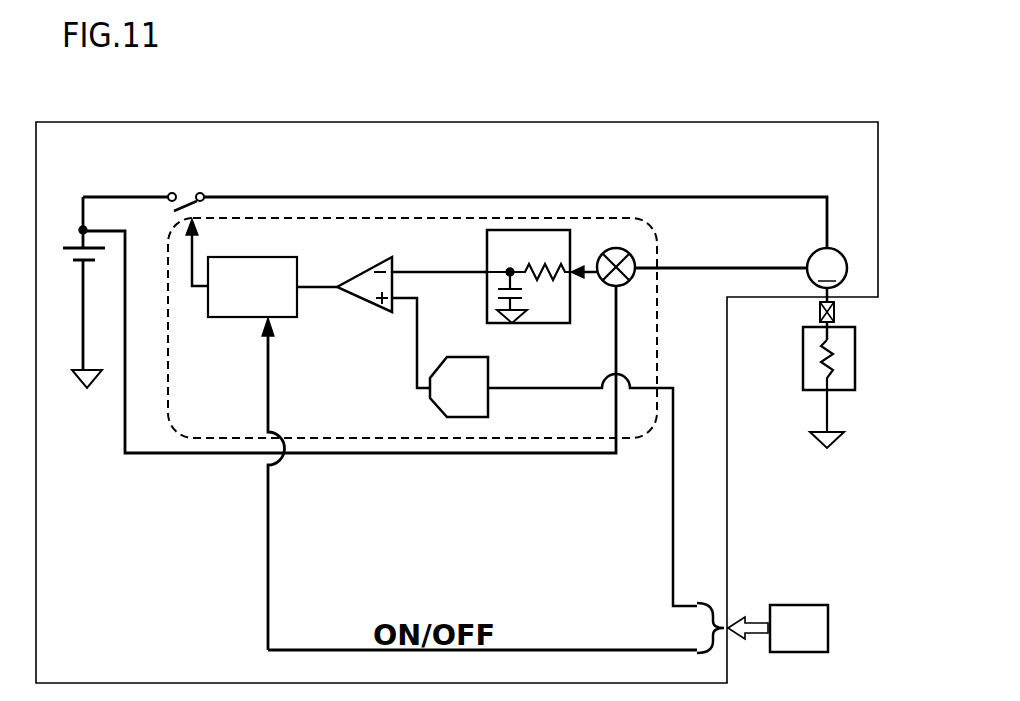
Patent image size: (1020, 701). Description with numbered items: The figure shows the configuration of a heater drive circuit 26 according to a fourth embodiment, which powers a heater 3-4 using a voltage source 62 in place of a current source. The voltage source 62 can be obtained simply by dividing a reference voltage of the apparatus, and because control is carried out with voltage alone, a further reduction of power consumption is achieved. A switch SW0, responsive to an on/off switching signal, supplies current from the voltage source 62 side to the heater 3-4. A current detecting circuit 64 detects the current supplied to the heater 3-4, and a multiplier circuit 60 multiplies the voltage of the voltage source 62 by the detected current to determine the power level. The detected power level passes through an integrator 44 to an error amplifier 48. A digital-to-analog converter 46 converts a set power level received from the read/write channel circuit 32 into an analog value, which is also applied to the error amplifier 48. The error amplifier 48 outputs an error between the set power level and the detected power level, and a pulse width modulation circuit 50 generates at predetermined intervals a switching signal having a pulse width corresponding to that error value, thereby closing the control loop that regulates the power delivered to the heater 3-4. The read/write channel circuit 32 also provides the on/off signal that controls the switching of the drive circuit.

The heater drive circuit 26 is at (600, 120).
The switch SW0 is at (183, 190).
The voltage source 62 is at (88, 262).
The pulse width modulation (PWM) circuit 50 is at (246, 313).
The error amplifier 48 is at (370, 298).
The integrator 44 is at (488, 266).
The digital-to-analog converter (DAC) 46 is at (438, 402).
The multiplier circuit 60 is at (633, 253).
The current detecting circuit 64 is at (807, 254).
The heater 3-4 is at (813, 370).
The read/write channel circuit 32 is at (786, 605).